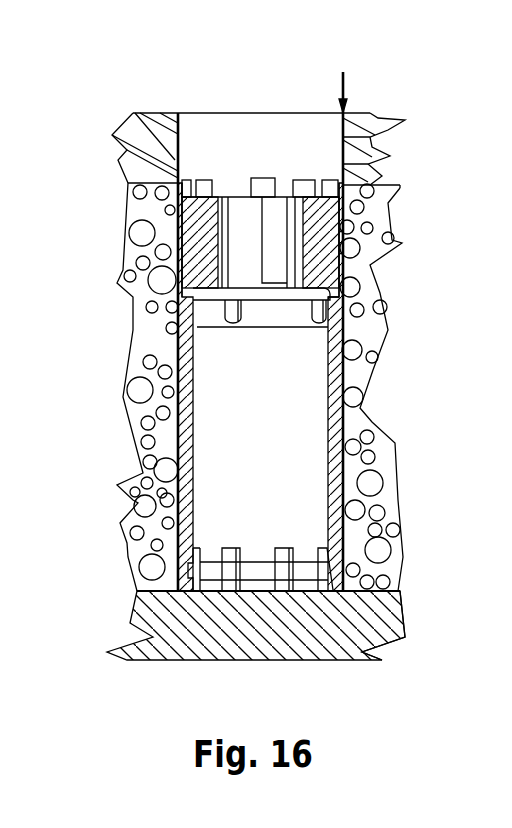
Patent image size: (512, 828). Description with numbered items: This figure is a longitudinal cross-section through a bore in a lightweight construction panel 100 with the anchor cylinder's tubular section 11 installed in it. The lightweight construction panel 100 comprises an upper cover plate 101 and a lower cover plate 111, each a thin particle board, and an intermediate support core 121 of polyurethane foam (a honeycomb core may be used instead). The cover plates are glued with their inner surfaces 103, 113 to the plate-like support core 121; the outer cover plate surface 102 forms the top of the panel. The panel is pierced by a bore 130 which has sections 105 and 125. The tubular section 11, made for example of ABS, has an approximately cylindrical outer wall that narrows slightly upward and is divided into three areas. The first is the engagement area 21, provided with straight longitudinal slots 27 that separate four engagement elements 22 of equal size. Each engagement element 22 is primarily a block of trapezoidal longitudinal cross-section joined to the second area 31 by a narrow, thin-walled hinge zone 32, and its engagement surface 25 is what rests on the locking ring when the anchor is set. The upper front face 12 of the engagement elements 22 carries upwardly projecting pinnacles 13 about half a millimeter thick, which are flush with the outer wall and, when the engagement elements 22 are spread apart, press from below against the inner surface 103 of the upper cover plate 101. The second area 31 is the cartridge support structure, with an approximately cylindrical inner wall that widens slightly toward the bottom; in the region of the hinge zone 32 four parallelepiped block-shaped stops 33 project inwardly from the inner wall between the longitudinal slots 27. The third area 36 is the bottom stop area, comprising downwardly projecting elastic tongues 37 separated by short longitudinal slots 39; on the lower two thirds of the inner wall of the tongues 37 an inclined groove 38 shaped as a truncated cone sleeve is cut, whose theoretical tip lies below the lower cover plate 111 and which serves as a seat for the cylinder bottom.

The tubular section 11 is at (184, 432).
The upper front face 12 is at (250, 197).
The pinnacle 13 is at (178, 185).
The engagement area 21 is at (163, 217).
The engagement element 22 is at (200, 235).
The engagement surface 25 is at (310, 248).
The longitudinal slot 27 is at (283, 232).
The second area 31 is at (168, 397).
The hinge zone 32 is at (200, 302).
The stop 33 is at (233, 312).
The third area 36 is at (160, 548).
The elastic tongue 37 is at (228, 577).
The inclined groove 38 is at (190, 570).
The short longitudinal slot 39 is at (185, 579).
The lightweight construction panel 100 is at (397, 653).
The upper cover plate 101 is at (370, 145).
The outer cover plate surface 102 is at (370, 113).
The inner surface 103 is at (378, 183).
The bore section 105 is at (343, 162).
The lower cover plate 111 is at (365, 622).
The inner surface 113 is at (368, 590).
The support core 121 is at (365, 370).
The bore section 125 is at (342, 307).
The bore 130 is at (343, 72).